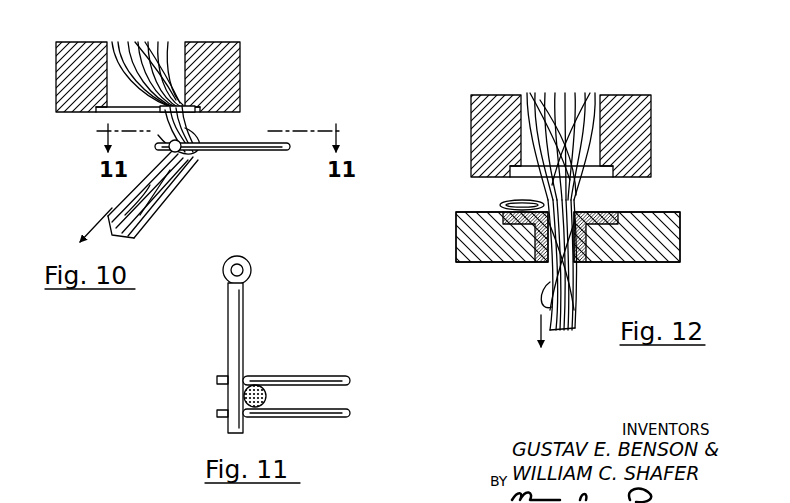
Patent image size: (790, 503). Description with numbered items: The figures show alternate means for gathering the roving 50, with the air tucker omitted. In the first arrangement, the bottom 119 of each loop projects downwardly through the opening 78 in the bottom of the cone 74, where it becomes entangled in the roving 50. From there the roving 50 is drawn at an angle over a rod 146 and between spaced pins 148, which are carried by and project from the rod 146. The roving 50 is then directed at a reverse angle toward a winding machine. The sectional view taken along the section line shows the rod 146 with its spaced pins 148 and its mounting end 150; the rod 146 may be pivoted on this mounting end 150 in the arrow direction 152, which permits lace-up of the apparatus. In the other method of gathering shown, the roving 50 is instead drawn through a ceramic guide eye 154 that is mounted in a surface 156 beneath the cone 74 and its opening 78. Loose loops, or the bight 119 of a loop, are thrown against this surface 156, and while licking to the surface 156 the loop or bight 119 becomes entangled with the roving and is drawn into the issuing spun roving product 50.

In FIG. 10, the cone 74 is at (108, 62).
In FIG. 12, the cone 74 is at (598, 108).
In FIG. 10, the opening 78 is at (178, 98).
In FIG. 12, the opening 78 is at (590, 160).
In FIG. 10, the bottom of loop 119 is at (150, 113).
In FIG. 12, the bottom of loop 119 is at (500, 203).
In FIG. 10, the roving 50 is at (125, 200).
In FIG. 11, the roving 50 is at (275, 395).
In FIG. 12, the roving 50 is at (578, 301).
In FIG. 10, the rod 146 is at (180, 175).
In FIG. 11, the rod 146 is at (230, 359).
In FIG. 10, the pins 148 is at (245, 152).
In FIG. 11, the pins 148 is at (330, 378).
In FIG. 11, the mounting end 150 is at (252, 271).
In FIG. 11, the arrow direction 152 is at (201, 274).
In FIG. 12, the ceramic guide eye 154 is at (601, 212).
In FIG. 12, the surface 156 is at (613, 172).